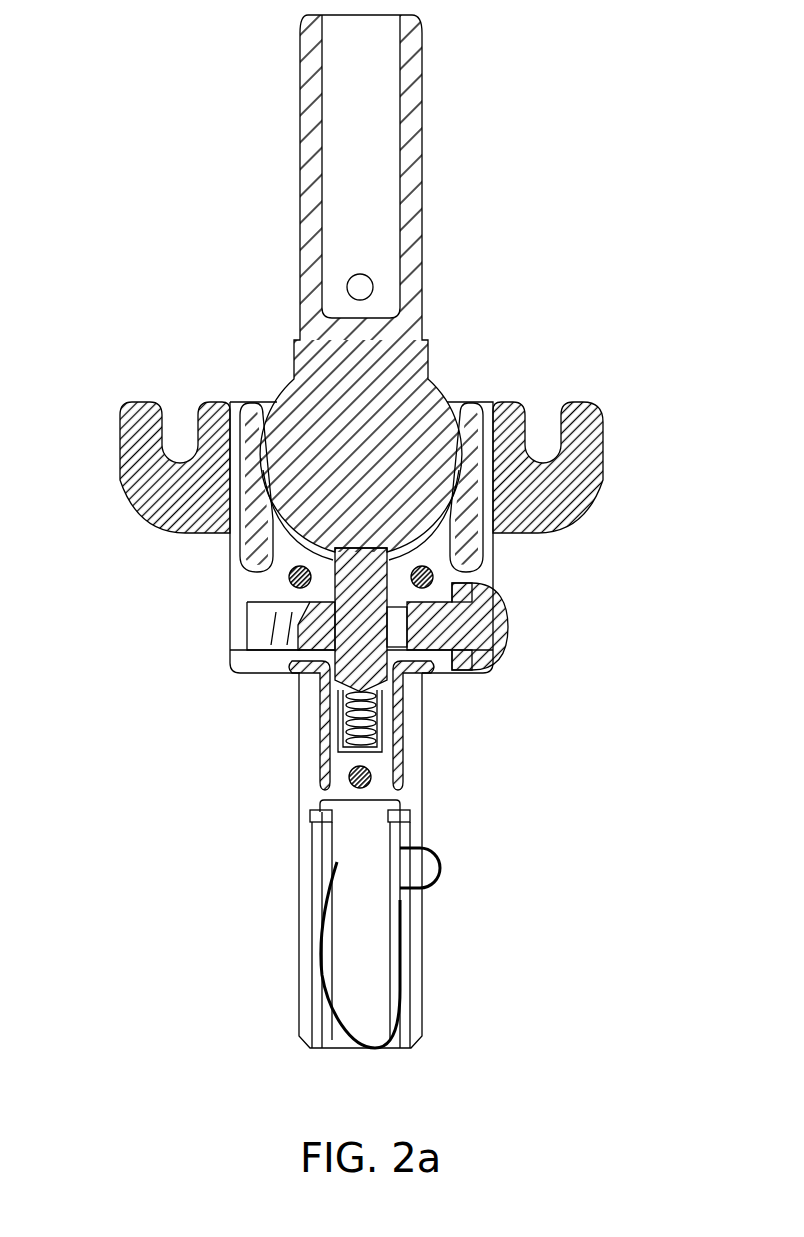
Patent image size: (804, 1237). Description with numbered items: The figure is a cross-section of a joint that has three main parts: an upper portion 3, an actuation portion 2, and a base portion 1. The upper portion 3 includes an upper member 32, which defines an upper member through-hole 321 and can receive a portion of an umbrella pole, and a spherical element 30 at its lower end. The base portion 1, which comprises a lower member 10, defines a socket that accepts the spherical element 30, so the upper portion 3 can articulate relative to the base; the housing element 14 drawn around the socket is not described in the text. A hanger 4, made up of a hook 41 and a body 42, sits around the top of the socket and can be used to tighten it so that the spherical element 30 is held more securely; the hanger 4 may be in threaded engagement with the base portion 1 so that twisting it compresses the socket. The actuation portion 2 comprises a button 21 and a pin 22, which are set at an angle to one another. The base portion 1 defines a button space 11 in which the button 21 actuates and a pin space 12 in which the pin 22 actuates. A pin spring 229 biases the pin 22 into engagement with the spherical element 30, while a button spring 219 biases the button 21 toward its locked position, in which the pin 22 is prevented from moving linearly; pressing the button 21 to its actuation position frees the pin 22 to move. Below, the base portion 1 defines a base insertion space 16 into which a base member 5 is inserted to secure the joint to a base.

The base portion 1 is at (342, 860).
The actuation portion 2 is at (367, 678).
The upper portion 3 is at (350, 287).
The hanger 4 is at (587, 423).
The base member 5 is at (390, 932).
The lower member 10 is at (272, 780).
The button space 11 is at (270, 643).
The pin space 12 is at (375, 672).
The housing 14 is at (215, 493).
The base insertion space 16 is at (362, 812).
The button 21 is at (478, 632).
The pin 22 is at (387, 620).
The spherical element 30 is at (345, 440).
The upper member 32 is at (393, 181).
The hook 41 is at (135, 402).
The body 42 is at (512, 402).
The button spring 219 is at (268, 610).
The pin spring 229 is at (345, 718).
The upper member through-hole 321 is at (352, 280).